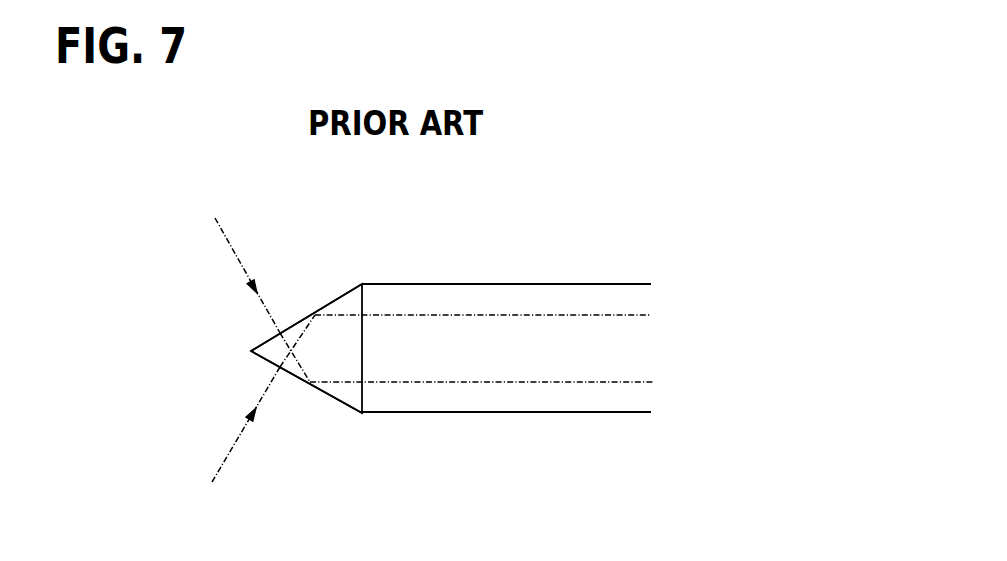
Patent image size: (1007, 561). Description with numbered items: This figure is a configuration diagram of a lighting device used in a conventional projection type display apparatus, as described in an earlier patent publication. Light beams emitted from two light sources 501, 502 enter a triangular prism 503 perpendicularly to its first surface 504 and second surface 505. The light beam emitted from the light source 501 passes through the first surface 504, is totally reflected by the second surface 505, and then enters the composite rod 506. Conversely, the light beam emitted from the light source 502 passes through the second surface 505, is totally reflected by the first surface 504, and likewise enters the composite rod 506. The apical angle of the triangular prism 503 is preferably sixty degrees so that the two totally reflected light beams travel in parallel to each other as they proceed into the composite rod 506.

The light source 501 is at (203, 220).
The light source 502 is at (214, 448).
The triangular prism 503 is at (256, 337).
The first surface 504 is at (348, 280).
The second surface 505 is at (342, 420).
The composite rod 506 is at (482, 294).